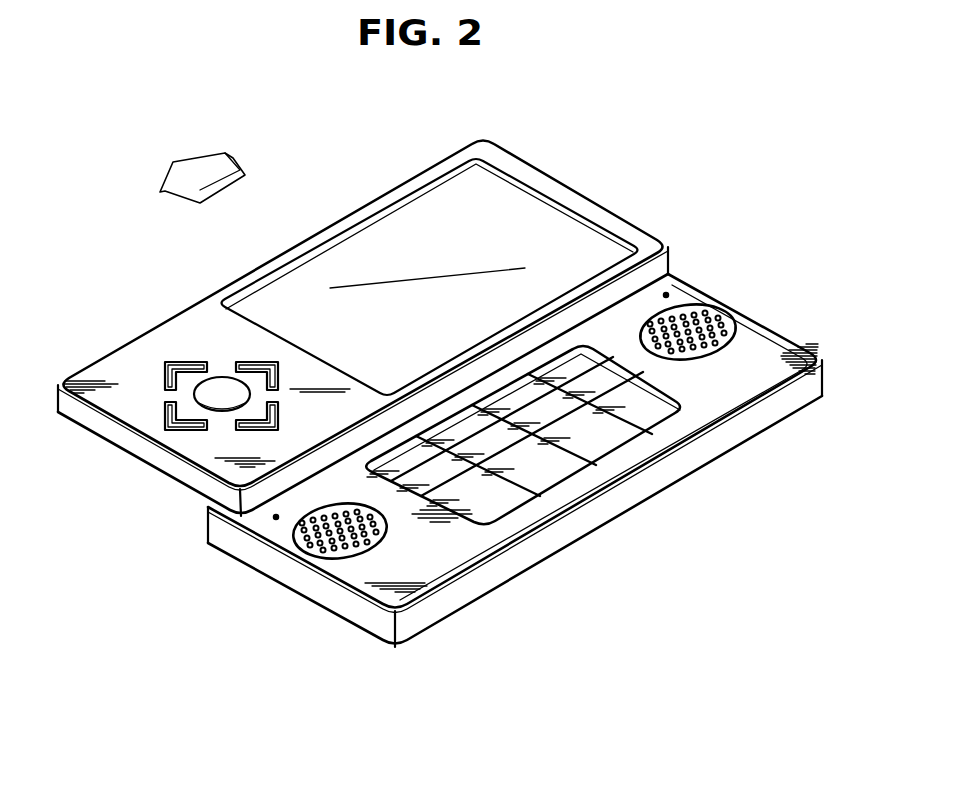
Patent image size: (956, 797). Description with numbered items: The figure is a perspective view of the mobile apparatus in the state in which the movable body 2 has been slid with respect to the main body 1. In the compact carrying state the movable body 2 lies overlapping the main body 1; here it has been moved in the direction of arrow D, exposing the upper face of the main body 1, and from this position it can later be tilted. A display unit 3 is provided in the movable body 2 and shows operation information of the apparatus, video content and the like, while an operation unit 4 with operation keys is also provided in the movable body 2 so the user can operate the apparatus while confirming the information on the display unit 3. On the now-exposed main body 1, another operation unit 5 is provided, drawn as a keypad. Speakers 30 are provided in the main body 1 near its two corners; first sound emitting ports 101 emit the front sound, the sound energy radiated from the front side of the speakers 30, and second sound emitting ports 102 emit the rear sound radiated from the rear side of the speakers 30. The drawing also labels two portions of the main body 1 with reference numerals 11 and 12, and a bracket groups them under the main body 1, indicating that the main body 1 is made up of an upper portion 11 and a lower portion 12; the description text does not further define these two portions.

The main body 1 is at (515, 470).
The movable body 2 is at (580, 205).
The display unit 3 is at (433, 211).
The operation unit 4 is at (153, 357).
The operation unit 5 is at (543, 482).
The upper case of main body 11 is at (520, 544).
The lower case of main body 12 is at (590, 603).
The speakers 30 is at (323, 560).
The first sound emitting ports 101 is at (363, 543).
The second sound emitting ports 102 is at (275, 519).
The direction of arrow D is at (235, 163).